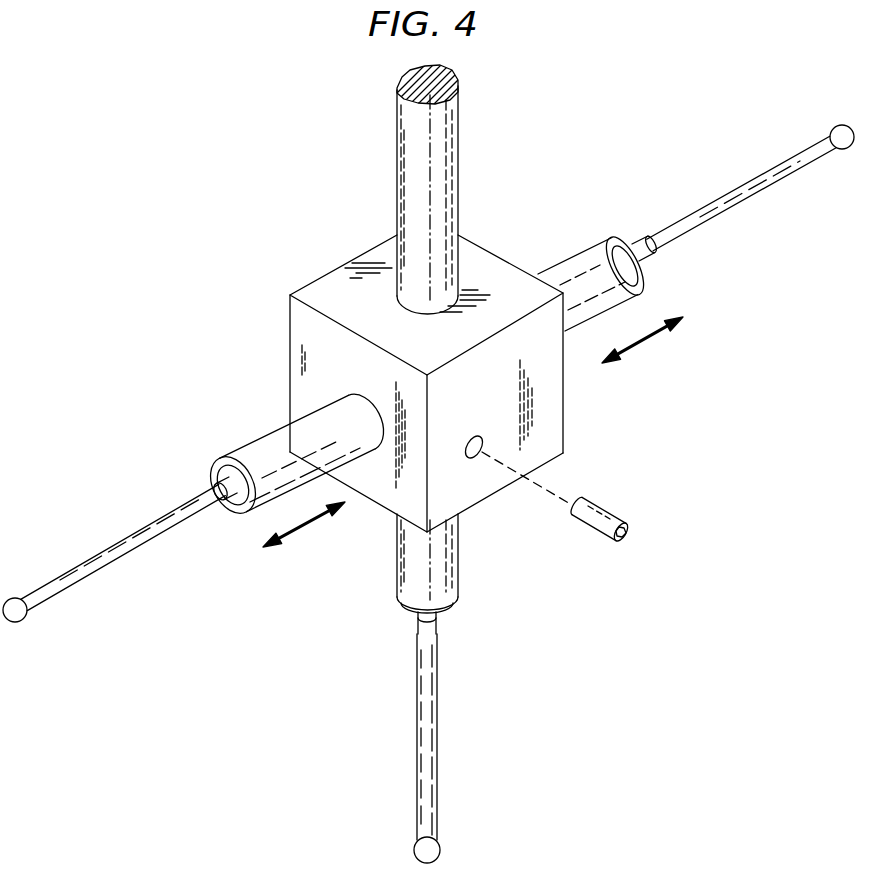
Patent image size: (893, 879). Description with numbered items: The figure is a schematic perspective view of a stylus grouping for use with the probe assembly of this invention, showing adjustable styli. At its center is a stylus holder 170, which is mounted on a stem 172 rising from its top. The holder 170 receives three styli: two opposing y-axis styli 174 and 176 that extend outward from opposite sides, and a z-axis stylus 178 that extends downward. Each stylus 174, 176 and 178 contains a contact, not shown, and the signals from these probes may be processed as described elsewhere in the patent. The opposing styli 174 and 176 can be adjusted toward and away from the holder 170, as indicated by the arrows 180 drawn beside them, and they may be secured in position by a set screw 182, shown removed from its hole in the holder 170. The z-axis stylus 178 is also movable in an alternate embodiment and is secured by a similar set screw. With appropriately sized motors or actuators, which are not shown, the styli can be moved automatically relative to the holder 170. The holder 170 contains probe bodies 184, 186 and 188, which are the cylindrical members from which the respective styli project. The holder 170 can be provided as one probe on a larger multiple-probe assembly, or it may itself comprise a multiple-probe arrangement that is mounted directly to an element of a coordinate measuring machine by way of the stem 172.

The stylus holder 170 is at (565, 420).
The stem 172 is at (458, 127).
The y-axis stylus 174 is at (778, 160).
The y-axis stylus 176 is at (110, 548).
The z-axis stylus 178 is at (437, 752).
The arrows 180 is at (645, 340).
The set screw 182 is at (596, 520).
The probe body 184 is at (567, 262).
The probe body 186 is at (262, 437).
The probe body 188 is at (458, 543).